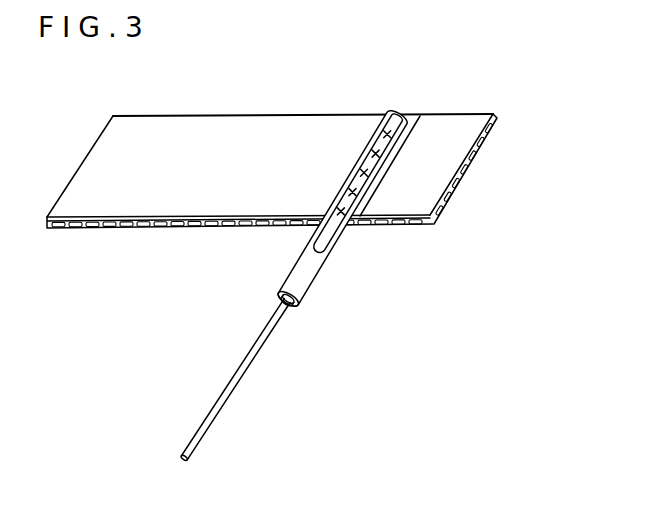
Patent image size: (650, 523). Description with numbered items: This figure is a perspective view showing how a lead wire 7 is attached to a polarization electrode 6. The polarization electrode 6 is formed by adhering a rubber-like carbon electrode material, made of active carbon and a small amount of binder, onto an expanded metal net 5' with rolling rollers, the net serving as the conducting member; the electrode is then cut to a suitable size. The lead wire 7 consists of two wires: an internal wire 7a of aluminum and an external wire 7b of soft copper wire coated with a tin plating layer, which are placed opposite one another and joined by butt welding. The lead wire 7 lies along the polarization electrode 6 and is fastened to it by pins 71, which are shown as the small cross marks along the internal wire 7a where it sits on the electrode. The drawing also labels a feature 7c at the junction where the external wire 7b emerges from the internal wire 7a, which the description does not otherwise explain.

The expanded metal net 5' is at (297, 171).
The polarization electrode 6 is at (452, 123).
The lead wire 7 is at (294, 285).
The internal wire 7a is at (305, 277).
The external wire 7b is at (238, 383).
The end ring of heat pipe 7c is at (293, 307).
The pins 71 is at (364, 178).